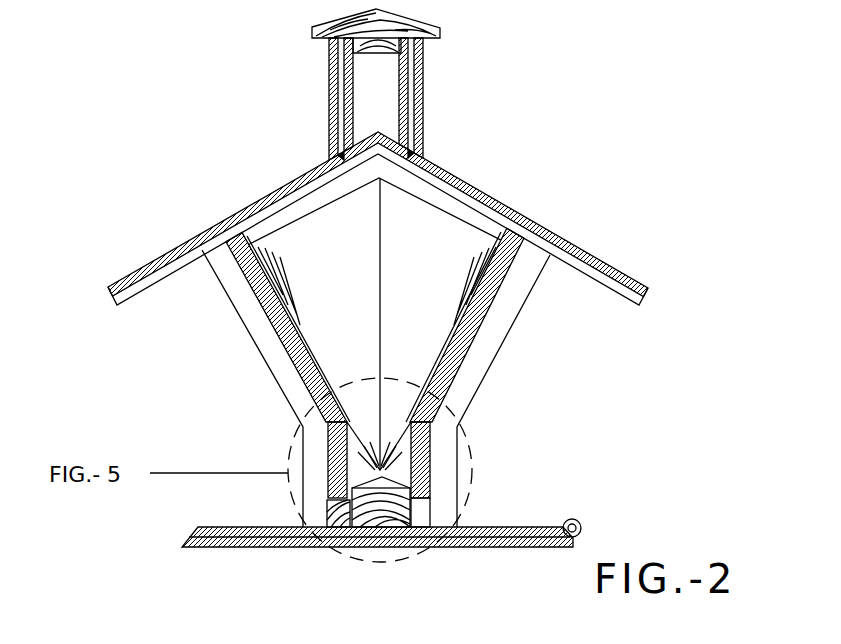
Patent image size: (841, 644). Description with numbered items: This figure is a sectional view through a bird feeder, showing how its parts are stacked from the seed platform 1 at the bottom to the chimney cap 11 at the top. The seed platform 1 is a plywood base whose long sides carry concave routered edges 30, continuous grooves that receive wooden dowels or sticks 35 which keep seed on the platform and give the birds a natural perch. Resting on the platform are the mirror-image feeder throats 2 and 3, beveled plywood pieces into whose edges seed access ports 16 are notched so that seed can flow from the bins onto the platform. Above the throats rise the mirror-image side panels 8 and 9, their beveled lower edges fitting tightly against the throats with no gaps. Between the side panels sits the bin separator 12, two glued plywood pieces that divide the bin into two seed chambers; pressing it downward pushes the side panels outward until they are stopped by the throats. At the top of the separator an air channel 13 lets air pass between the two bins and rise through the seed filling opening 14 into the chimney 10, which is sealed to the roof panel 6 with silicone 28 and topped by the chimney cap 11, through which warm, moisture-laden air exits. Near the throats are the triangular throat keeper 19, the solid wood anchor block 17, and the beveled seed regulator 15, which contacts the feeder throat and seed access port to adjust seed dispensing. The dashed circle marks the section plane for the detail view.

The seed platform 1 is at (252, 549).
The feeder throat 2 is at (433, 452).
The feeder throat 3 is at (326, 446).
The roof panel 6 is at (267, 193).
The side panel 8 is at (284, 350).
The side panel 9 is at (471, 348).
The chimney 10 is at (328, 76).
The chimney cap 11 is at (311, 32).
The bin separator 12 is at (409, 297).
The air channel 13 is at (441, 209).
The seed filling opening 14 is at (383, 151).
The seed regulator 15 is at (325, 509).
The seed access port 16 is at (417, 507).
The anchor block 17 is at (426, 518).
The throat keeper 19 is at (397, 471).
The silicone 28 is at (336, 149).
The concave routered edge 30 is at (196, 529).
The dowels or sticks 35 is at (583, 530).